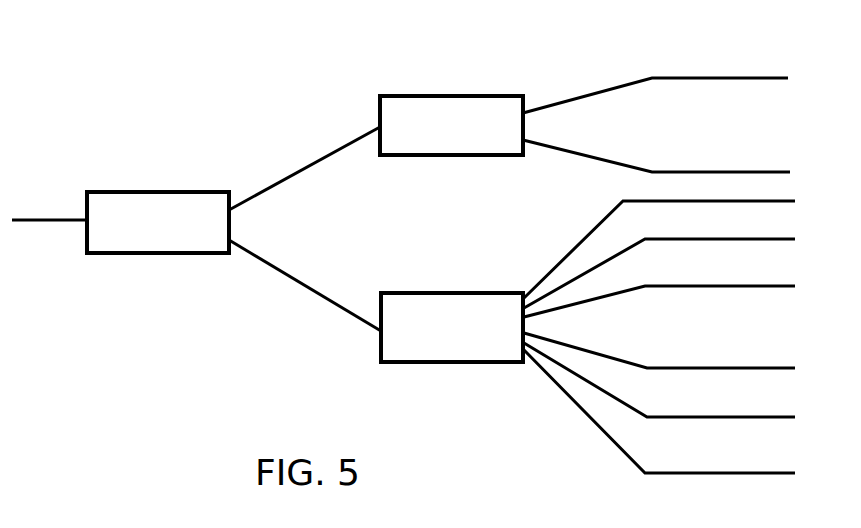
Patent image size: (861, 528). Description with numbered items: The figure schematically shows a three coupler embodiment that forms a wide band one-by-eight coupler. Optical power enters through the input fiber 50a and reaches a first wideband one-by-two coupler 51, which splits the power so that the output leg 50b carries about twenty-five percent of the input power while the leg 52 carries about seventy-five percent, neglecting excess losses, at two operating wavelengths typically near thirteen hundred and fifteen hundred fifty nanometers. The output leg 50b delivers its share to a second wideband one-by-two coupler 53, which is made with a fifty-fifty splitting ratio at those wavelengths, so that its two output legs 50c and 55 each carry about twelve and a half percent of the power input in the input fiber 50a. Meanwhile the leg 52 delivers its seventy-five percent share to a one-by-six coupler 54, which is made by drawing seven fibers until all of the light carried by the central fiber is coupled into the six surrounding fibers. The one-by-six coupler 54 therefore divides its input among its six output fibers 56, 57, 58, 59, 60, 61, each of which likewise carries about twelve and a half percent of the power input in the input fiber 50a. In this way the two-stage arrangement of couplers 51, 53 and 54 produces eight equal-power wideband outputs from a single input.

The input fiber 50a is at (50, 218).
The first wideband 1×2 coupler 51 is at (163, 192).
The output leg 50b is at (284, 178).
The leg 52 is at (292, 272).
The second wideband 1×2 coupler 53 is at (395, 95).
The 1×6 coupler 54 is at (397, 293).
The output leg 50c is at (681, 88).
The output leg 55 is at (676, 162).
The output fiber 56 is at (678, 243).
The output fiber 57 is at (678, 267).
The output fiber 58 is at (678, 295).
The output fiber 59 is at (680, 358).
The output fiber 60 is at (681, 388).
The output fiber 61 is at (681, 420).